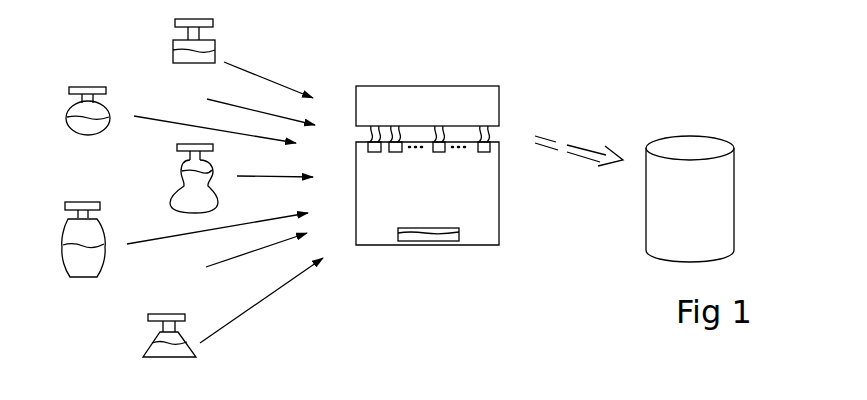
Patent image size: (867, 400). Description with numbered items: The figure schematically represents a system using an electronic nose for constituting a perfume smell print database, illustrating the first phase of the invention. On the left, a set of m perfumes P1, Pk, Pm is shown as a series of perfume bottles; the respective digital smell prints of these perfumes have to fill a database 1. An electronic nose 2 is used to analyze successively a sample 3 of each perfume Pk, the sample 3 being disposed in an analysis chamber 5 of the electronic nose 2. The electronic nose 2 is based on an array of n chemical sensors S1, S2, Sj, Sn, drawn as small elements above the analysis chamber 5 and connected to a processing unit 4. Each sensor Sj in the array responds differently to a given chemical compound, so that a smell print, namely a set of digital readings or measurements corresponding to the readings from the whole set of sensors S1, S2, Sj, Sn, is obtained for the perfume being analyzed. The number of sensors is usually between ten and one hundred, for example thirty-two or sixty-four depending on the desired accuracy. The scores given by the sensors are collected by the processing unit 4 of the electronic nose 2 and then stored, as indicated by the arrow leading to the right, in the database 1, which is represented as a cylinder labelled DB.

The perfume P1 is at (173, 55).
The perfume Pk is at (177, 187).
The perfume Pm is at (152, 343).
The chemical sensor S1 is at (368, 147).
The chemical sensor S2 is at (395, 147).
The chemical sensor Sj is at (439, 146).
The chemical sensor Sn is at (497, 147).
The processing unit 4 is at (478, 86).
The electronic nose 2 is at (499, 218).
The sample 3 is at (423, 242).
The analysis chamber 5 is at (377, 232).
The database 1 is at (735, 184).